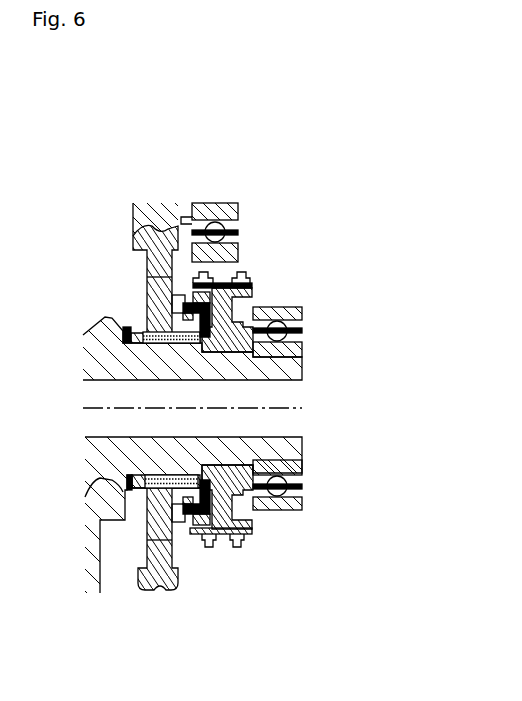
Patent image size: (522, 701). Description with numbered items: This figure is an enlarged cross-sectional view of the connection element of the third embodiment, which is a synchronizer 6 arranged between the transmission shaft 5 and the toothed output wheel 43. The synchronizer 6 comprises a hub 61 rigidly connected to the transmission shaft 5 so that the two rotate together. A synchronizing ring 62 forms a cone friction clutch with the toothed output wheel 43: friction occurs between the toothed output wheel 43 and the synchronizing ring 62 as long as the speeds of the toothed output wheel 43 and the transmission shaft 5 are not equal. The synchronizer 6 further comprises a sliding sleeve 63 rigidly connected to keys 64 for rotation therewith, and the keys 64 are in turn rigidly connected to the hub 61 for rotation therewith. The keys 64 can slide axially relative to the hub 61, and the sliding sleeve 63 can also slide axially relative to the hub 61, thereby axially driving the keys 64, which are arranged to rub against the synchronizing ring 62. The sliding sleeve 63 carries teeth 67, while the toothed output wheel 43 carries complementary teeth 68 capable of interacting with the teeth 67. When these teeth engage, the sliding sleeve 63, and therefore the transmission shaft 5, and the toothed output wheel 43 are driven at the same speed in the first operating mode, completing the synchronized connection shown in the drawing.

The transmission shaft 5 is at (302, 373).
The synchronizer 6 is at (278, 271).
The toothed output wheel 43 is at (178, 540).
The hub 61 is at (220, 478).
The synchronizing ring 62 is at (145, 262).
The sliding sleeve 63 is at (253, 267).
The keys 64 is at (220, 548).
The teeth 67 is at (193, 283).
The complementary teeth 68 is at (190, 300).